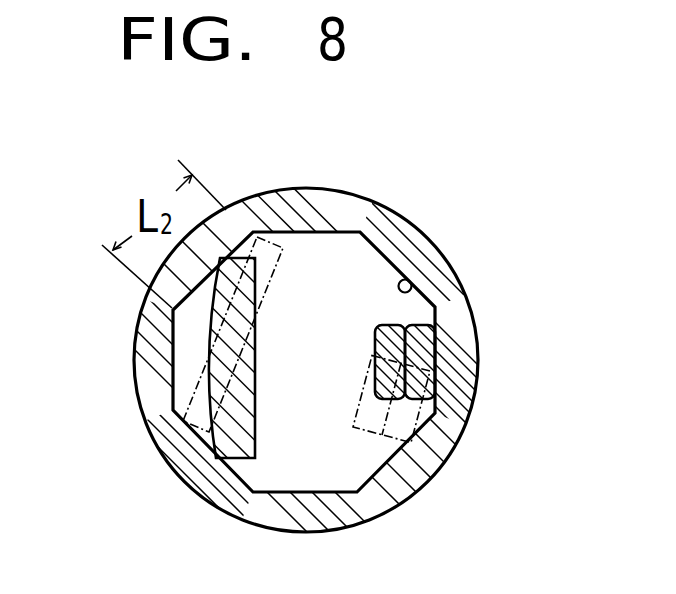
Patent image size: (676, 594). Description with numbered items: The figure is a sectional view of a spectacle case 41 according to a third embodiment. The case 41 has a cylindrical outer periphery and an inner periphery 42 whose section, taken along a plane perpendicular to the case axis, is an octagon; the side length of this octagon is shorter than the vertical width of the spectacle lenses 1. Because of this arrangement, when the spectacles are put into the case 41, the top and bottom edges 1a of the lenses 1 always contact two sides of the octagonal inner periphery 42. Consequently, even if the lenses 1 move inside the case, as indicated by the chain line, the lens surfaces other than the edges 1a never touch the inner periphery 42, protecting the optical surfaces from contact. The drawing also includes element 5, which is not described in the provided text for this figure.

The spectacle lens 1 is at (233, 418).
The top and bottom edges 1a is at (219, 260).
The spectacle case 41 is at (407, 247).
The inner periphery 42 is at (414, 287).
The coils 5 is at (428, 386).